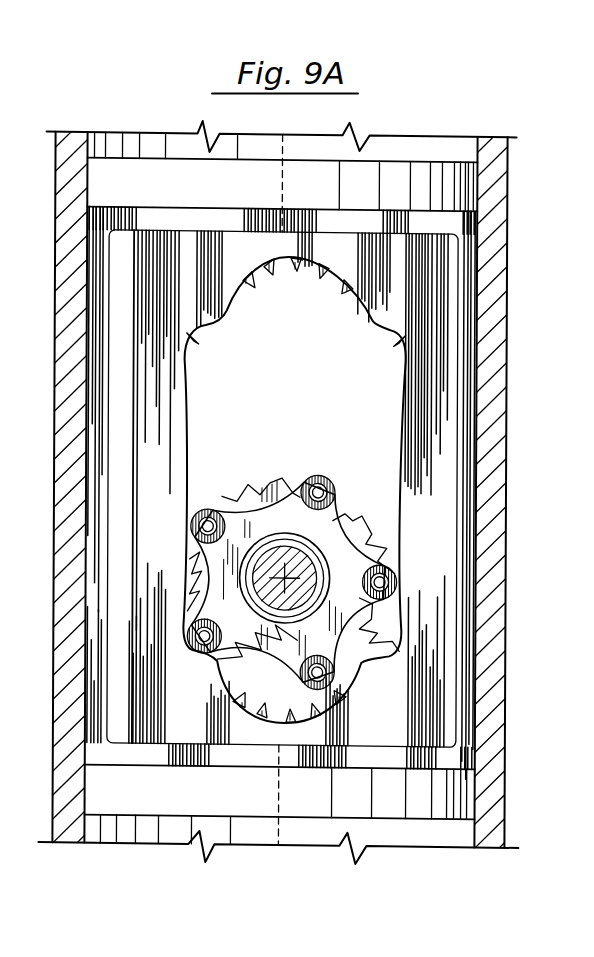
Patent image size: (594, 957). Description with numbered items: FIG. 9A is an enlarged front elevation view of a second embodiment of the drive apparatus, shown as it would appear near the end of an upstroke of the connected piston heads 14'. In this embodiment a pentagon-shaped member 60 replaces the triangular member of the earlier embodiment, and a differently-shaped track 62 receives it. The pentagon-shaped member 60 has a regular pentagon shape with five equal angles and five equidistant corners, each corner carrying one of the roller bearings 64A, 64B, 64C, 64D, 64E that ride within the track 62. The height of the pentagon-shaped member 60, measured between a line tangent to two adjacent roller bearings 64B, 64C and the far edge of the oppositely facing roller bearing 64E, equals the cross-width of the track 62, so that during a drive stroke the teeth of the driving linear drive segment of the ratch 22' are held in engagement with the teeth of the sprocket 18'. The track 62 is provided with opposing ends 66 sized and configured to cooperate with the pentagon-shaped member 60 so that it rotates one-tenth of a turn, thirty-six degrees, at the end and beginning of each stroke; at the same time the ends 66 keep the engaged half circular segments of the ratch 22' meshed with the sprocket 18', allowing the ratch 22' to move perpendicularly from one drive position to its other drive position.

The piston head 14' is at (301, 478).
The track 62 is at (430, 472).
The ratch 22' is at (294, 490).
The opposing ends of track 66 is at (300, 255).
The pentagon-shaped member 60 is at (337, 522).
The sprocket 18' is at (293, 560).
The roller bearing 64A is at (340, 678).
The roller bearing 64B is at (193, 650).
The roller bearing 64C is at (208, 510).
The roller bearing 64D is at (318, 476).
The roller bearing 64E is at (403, 560).